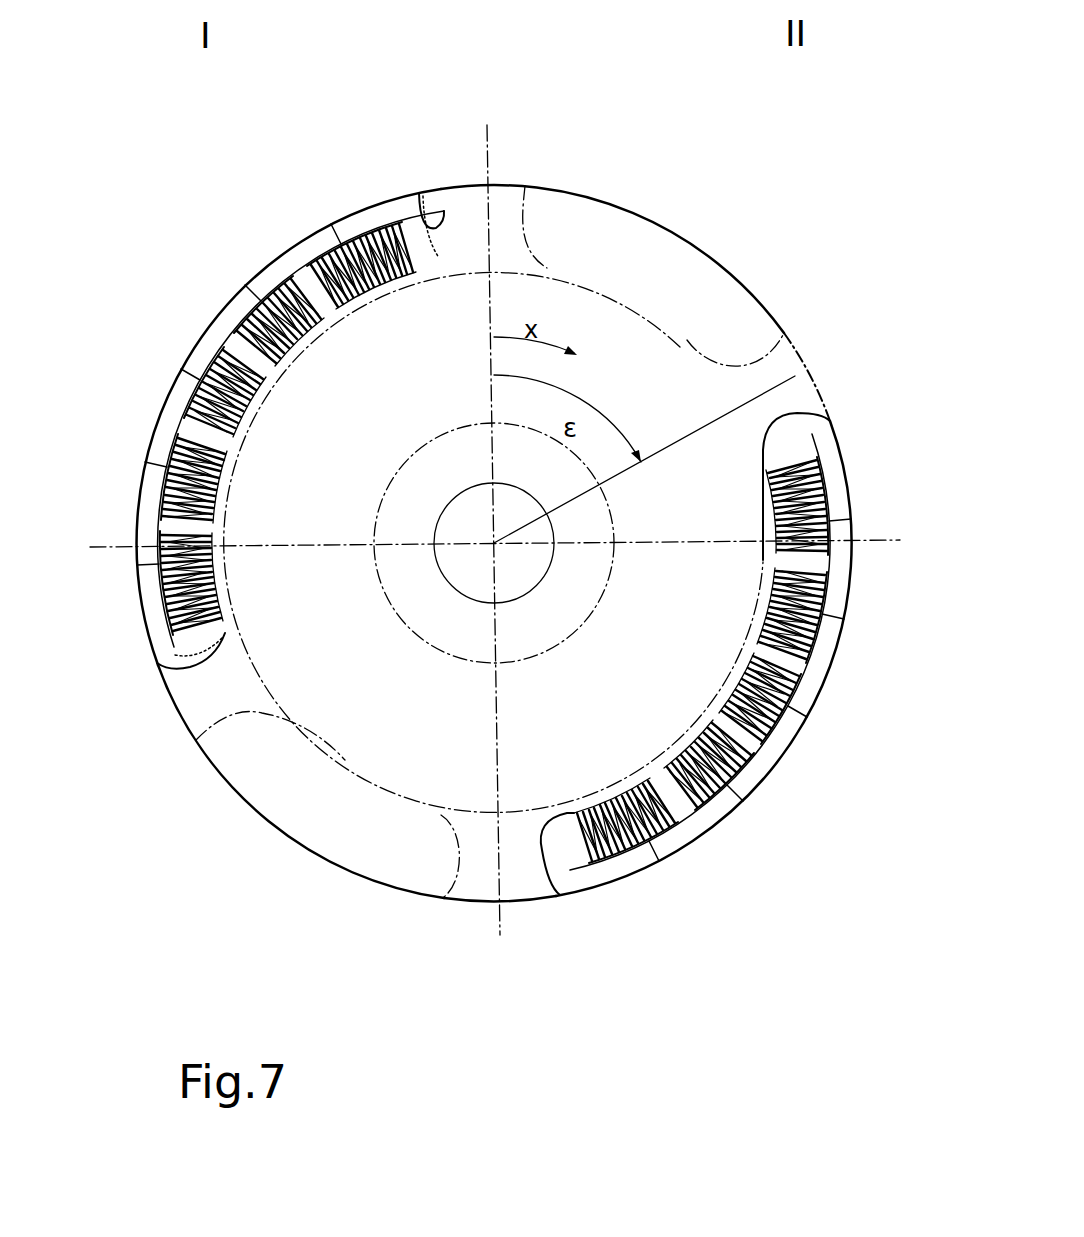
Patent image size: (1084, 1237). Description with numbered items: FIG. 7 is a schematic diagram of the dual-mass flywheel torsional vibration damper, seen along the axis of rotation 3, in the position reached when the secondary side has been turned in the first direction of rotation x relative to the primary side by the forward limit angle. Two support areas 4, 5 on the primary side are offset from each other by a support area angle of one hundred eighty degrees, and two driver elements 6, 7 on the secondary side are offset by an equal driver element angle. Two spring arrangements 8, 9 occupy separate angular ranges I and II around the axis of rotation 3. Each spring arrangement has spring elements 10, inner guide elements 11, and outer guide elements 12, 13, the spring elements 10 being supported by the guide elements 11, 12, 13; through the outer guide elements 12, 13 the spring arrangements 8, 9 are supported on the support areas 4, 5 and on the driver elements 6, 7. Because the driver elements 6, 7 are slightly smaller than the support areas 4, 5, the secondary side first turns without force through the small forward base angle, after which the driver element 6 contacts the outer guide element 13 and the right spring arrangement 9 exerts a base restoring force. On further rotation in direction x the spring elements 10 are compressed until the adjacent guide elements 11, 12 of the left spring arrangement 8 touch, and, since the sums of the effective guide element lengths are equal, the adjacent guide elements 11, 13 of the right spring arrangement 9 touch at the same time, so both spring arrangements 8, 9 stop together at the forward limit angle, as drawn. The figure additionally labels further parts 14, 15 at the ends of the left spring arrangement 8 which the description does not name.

The axis of rotation 3 is at (491, 549).
The support area 4 is at (515, 203).
The support area 5 is at (473, 883).
The driver element 6 is at (805, 392).
The driver element 7 is at (193, 717).
The spring arrangement 8 is at (165, 290).
The spring arrangement 9 is at (808, 800).
The spring element 10 is at (228, 580).
The inner guide element 11 is at (258, 272).
The outer guide element 12 is at (350, 217).
The outer guide element 13 is at (830, 452).
The end cap of first group 14 is at (440, 218).
The weld seam 15 is at (420, 200).